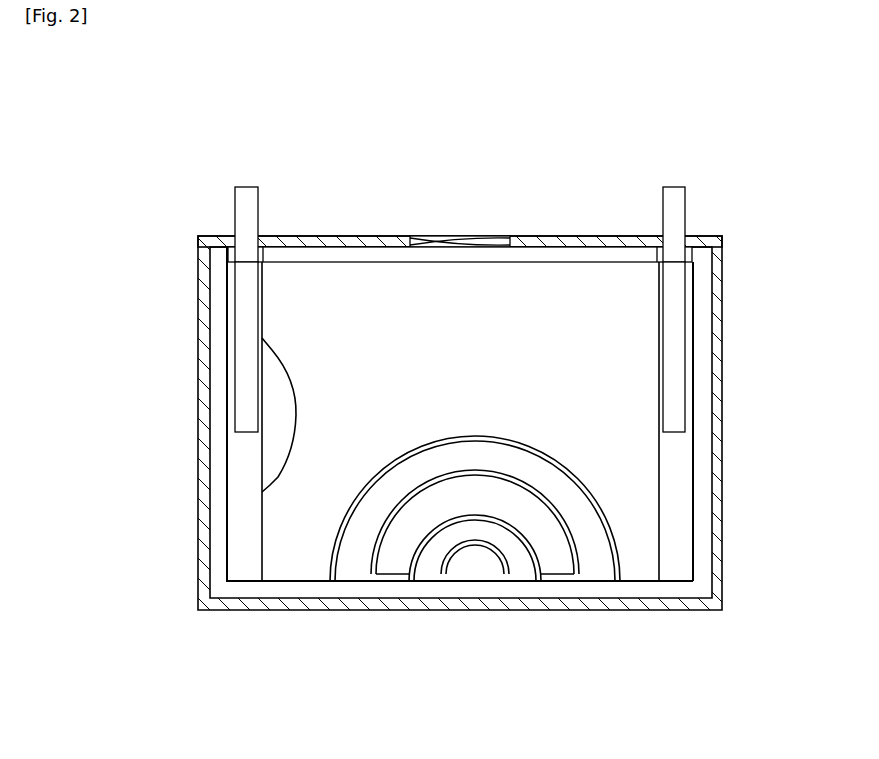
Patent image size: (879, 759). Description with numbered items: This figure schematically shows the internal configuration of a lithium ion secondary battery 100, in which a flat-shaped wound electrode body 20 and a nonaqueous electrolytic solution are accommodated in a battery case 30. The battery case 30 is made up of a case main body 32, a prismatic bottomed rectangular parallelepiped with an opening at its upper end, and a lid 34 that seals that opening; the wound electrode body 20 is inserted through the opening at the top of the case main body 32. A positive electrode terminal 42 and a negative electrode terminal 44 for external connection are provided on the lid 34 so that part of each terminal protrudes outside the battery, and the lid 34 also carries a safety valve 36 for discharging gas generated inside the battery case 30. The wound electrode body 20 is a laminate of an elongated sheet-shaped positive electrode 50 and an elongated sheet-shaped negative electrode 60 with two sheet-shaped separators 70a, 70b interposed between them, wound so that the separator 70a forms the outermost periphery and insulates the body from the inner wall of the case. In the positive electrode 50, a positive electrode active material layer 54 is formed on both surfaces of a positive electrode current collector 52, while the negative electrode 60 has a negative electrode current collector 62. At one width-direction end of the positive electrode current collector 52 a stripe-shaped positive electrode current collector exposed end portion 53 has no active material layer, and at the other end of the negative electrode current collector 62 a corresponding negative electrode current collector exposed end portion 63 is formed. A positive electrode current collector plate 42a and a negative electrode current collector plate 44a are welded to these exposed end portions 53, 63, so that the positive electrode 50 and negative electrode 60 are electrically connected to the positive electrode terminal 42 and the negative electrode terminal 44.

The lithium ion secondary battery 100 is at (725, 202).
The wound electrode body 20 is at (454, 450).
The battery case 30 is at (504, 380).
The case main body 32 is at (724, 588).
The lid 34 is at (614, 236).
The safety valve 36 is at (459, 236).
The positive electrode terminal 42 is at (246, 185).
The positive electrode current collector plate 42a is at (248, 326).
The negative electrode terminal 44 is at (674, 187).
The negative electrode current collector plate 44a is at (676, 294).
The positive electrode 50 is at (355, 567).
The positive electrode current collector 52 is at (228, 484).
The positive electrode current collector exposed end portion 53 is at (245, 559).
The positive electrode active material layer 54 is at (284, 380).
The negative electrode 60 is at (430, 575).
The negative electrode current collector 62 is at (695, 443).
The negative electrode current collector exposed end portion 63 is at (680, 486).
The separator 70a is at (298, 517).
The separator 70b is at (395, 567).